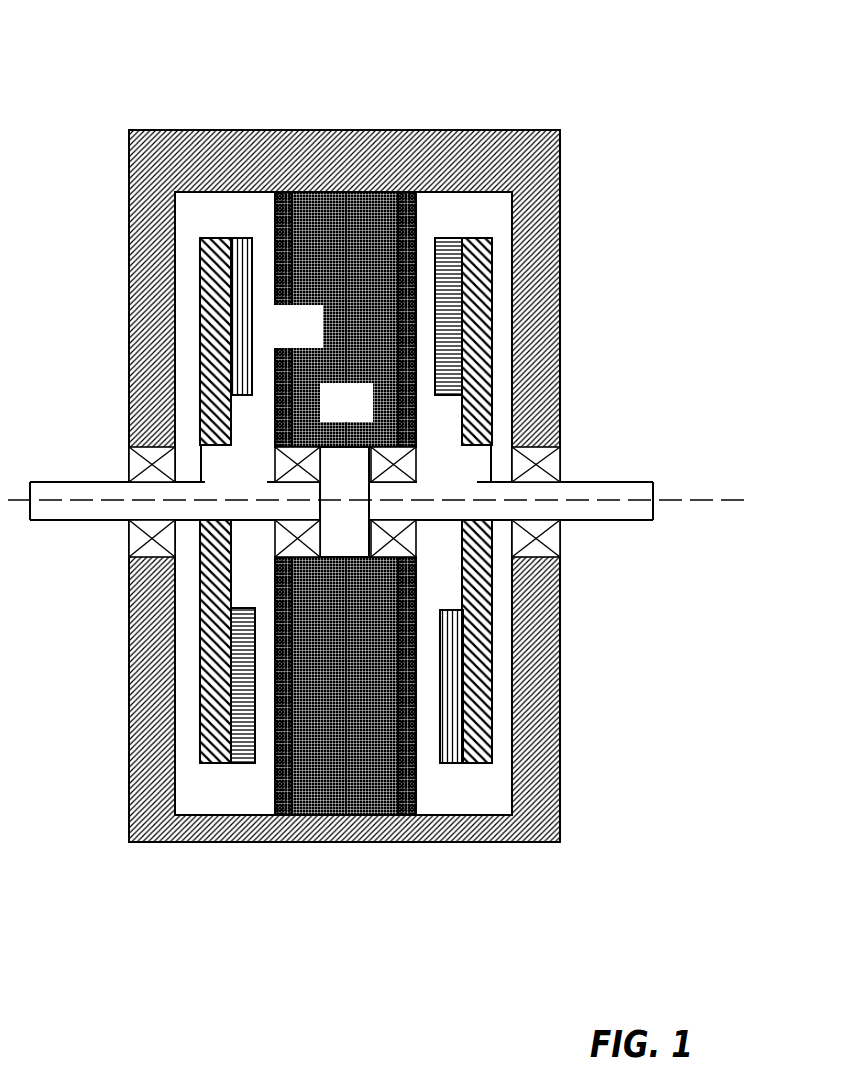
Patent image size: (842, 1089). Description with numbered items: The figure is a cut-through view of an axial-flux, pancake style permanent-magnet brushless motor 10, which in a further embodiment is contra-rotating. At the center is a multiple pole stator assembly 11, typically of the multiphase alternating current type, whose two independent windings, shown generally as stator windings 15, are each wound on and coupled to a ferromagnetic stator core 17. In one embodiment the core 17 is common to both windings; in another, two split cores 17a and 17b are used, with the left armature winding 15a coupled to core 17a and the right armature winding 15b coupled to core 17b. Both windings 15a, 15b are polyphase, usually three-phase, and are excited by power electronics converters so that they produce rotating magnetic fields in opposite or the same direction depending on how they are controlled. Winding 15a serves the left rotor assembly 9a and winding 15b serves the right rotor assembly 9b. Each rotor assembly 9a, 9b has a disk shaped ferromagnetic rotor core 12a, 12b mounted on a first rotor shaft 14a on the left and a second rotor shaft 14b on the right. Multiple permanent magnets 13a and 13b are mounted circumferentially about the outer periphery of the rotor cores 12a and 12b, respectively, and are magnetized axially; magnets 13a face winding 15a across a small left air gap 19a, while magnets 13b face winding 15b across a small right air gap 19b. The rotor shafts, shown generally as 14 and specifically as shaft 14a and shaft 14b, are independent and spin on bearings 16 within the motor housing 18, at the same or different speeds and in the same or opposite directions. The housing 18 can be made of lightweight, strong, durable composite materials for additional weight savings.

The axial-flux pancake style PM brushless motor 10 is at (698, 82).
The stator assembly 11 is at (286, 342).
The rotor core 12a is at (200, 278).
The rotor core 12b is at (490, 260).
The permanent magnets 13a is at (238, 238).
The permanent magnets 13b is at (452, 238).
The rotor shafts 14 is at (655, 442).
The first rotor shaft 14a is at (73, 482).
The second rotor shaft 14b is at (622, 482).
The stator windings 15 is at (360, 903).
The armature winding 15a is at (285, 218).
The armature winding 15b is at (409, 218).
The bearings 16 is at (272, 540).
The ferromagnetic stator core 17 is at (334, 417).
The split stator core 17a is at (315, 218).
The split stator core 17b is at (372, 218).
The motor housing 18 is at (562, 322).
The left air gap 19a is at (263, 267).
The right air gap 19b is at (423, 253).
The rotor assembly 9a is at (271, 502).
The rotor assembly 9b is at (416, 502).